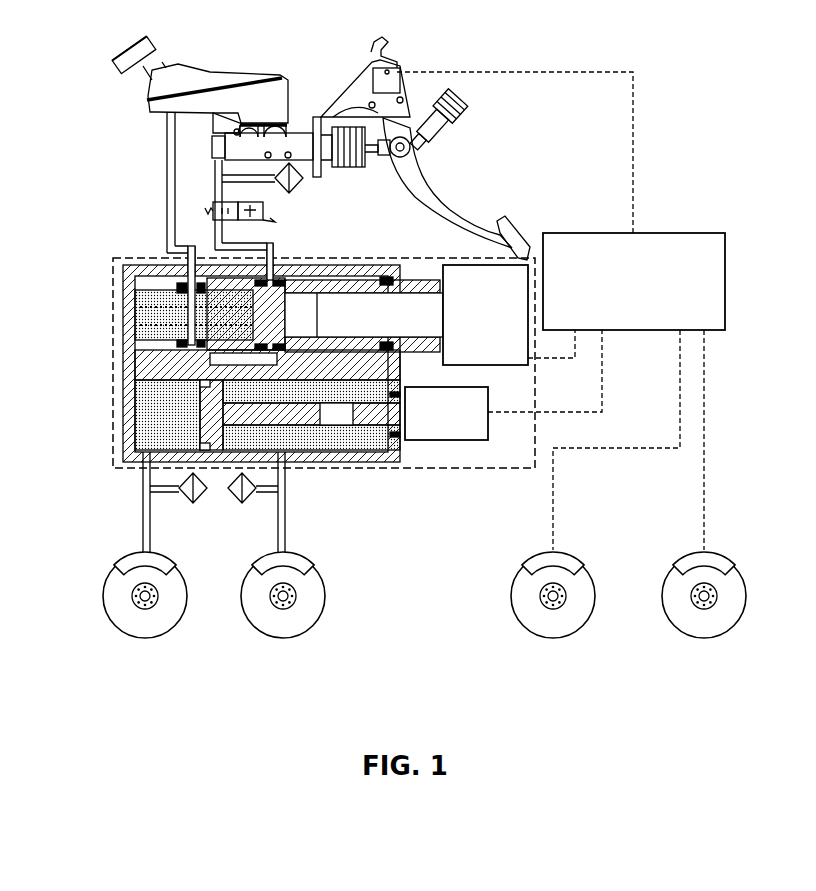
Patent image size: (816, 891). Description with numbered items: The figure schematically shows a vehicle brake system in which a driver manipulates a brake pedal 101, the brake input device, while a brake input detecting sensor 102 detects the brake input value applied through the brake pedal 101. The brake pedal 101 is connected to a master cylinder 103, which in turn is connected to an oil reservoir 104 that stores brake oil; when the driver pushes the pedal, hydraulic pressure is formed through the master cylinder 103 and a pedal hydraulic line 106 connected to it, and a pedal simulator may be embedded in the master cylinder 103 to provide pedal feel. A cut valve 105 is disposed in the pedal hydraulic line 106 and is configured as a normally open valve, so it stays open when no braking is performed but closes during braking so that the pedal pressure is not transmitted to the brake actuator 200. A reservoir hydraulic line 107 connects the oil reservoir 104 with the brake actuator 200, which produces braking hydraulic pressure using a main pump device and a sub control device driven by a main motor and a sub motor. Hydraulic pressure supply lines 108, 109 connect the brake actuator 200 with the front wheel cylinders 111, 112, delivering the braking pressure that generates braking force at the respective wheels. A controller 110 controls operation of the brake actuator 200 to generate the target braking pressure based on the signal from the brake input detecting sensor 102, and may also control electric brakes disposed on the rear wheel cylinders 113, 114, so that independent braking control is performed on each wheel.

The brake pedal 101 is at (447, 193).
The brake input detecting sensor 102 is at (377, 40).
The master cylinder 103 is at (300, 130).
The oil reservoir 104 is at (227, 80).
The cut valve 105 is at (250, 200).
The pedal hydraulic line 106 is at (228, 237).
The reservoir hydraulic line 107 is at (167, 202).
The hydraulic pressure supply line 108 is at (140, 506).
The hydraulic pressure supply line 109 is at (287, 505).
The controller 110 is at (675, 231).
The wheel cylinder 111 is at (118, 550).
The wheel cylinder 112 is at (305, 552).
The rear wheel cylinder 113 is at (528, 562).
The rear wheel cylinder 114 is at (727, 562).
The brake actuator 200 is at (113, 266).